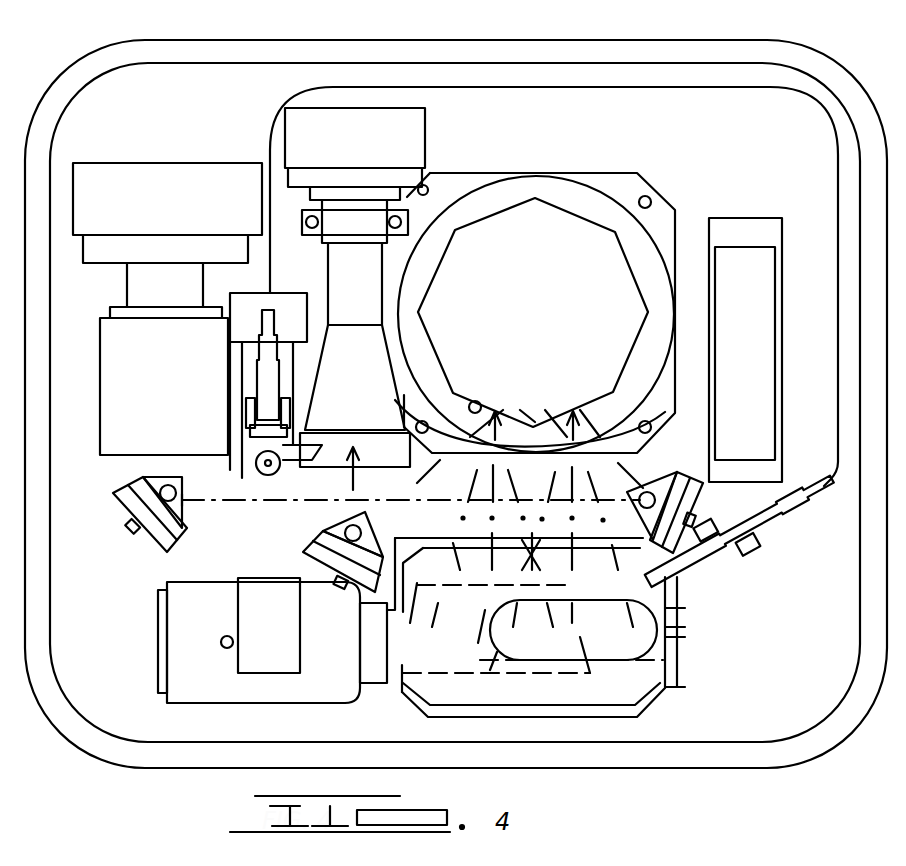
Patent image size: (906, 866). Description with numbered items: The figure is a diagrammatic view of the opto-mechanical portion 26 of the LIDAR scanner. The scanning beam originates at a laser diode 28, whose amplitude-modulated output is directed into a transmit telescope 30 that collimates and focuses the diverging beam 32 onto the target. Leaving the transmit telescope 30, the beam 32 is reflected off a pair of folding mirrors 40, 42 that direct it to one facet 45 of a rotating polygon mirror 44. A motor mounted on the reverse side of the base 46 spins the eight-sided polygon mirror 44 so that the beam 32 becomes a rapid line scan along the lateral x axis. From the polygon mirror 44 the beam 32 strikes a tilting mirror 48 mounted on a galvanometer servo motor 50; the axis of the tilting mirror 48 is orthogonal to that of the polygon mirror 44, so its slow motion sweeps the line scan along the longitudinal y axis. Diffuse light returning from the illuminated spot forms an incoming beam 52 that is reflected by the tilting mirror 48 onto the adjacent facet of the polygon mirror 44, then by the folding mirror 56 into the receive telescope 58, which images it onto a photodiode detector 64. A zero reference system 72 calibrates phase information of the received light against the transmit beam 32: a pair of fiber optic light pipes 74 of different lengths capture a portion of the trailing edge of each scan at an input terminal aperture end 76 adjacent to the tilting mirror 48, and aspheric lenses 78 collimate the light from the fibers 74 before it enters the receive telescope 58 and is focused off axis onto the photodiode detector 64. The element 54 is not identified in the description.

The opto-mechanical portion 26 is at (78, 58).
The laser diode 28 is at (160, 172).
The transmit telescope 30 is at (96, 356).
The beam 32 is at (205, 505).
The folding mirror 40 is at (143, 478).
The folding mirror 42 is at (653, 485).
The rotating polygon mirror 44 is at (523, 200).
The facet 45 is at (605, 432).
The base 46 is at (637, 190).
The tilting mirror 48 is at (650, 705).
The galvanometer servo motor 50 is at (170, 670).
The incoming beam 52 is at (455, 562).
The lamp 54 is at (472, 408).
The folding mirror 56 is at (322, 530).
The receive telescope 58 is at (322, 293).
The photodiode detector 64 is at (415, 132).
The zero reference system 72 is at (238, 290).
The fiber optic light pipes 74 is at (684, 88).
The input terminal aperture end 76 is at (712, 560).
The aspheric lenses 78 is at (250, 442).